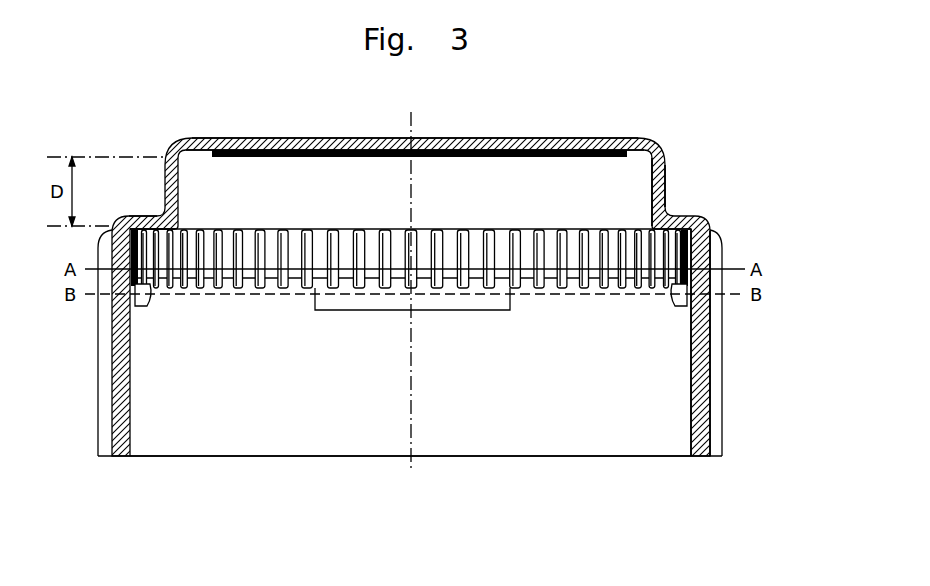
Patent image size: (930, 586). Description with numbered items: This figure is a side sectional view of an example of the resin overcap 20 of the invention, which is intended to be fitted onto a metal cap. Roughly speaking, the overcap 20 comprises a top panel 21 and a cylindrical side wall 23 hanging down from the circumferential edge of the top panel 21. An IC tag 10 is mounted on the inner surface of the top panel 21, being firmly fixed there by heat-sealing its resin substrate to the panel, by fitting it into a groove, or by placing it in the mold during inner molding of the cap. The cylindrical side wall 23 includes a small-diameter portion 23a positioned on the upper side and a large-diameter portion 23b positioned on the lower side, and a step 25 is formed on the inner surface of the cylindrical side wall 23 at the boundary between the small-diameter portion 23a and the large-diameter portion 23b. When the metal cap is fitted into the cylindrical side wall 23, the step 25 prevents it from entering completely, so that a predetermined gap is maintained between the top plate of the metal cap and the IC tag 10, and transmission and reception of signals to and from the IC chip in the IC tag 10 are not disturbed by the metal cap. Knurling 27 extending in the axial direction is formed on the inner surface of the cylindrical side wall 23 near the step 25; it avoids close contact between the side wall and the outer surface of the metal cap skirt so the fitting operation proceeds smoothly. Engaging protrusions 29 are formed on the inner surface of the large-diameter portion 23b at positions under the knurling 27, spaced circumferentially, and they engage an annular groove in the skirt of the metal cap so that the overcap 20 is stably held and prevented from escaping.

The overcap 20 is at (157, 134).
The top panel 21 is at (332, 137).
The IC tag 10 is at (486, 158).
The step 25 is at (160, 215).
The cylindrical side wall 23 is at (790, 175).
The small-diameter portion 23a is at (667, 190).
The large-diameter portion 23b is at (712, 262).
The knurling 27 is at (596, 290).
The engaging protrusions 29 is at (147, 306).